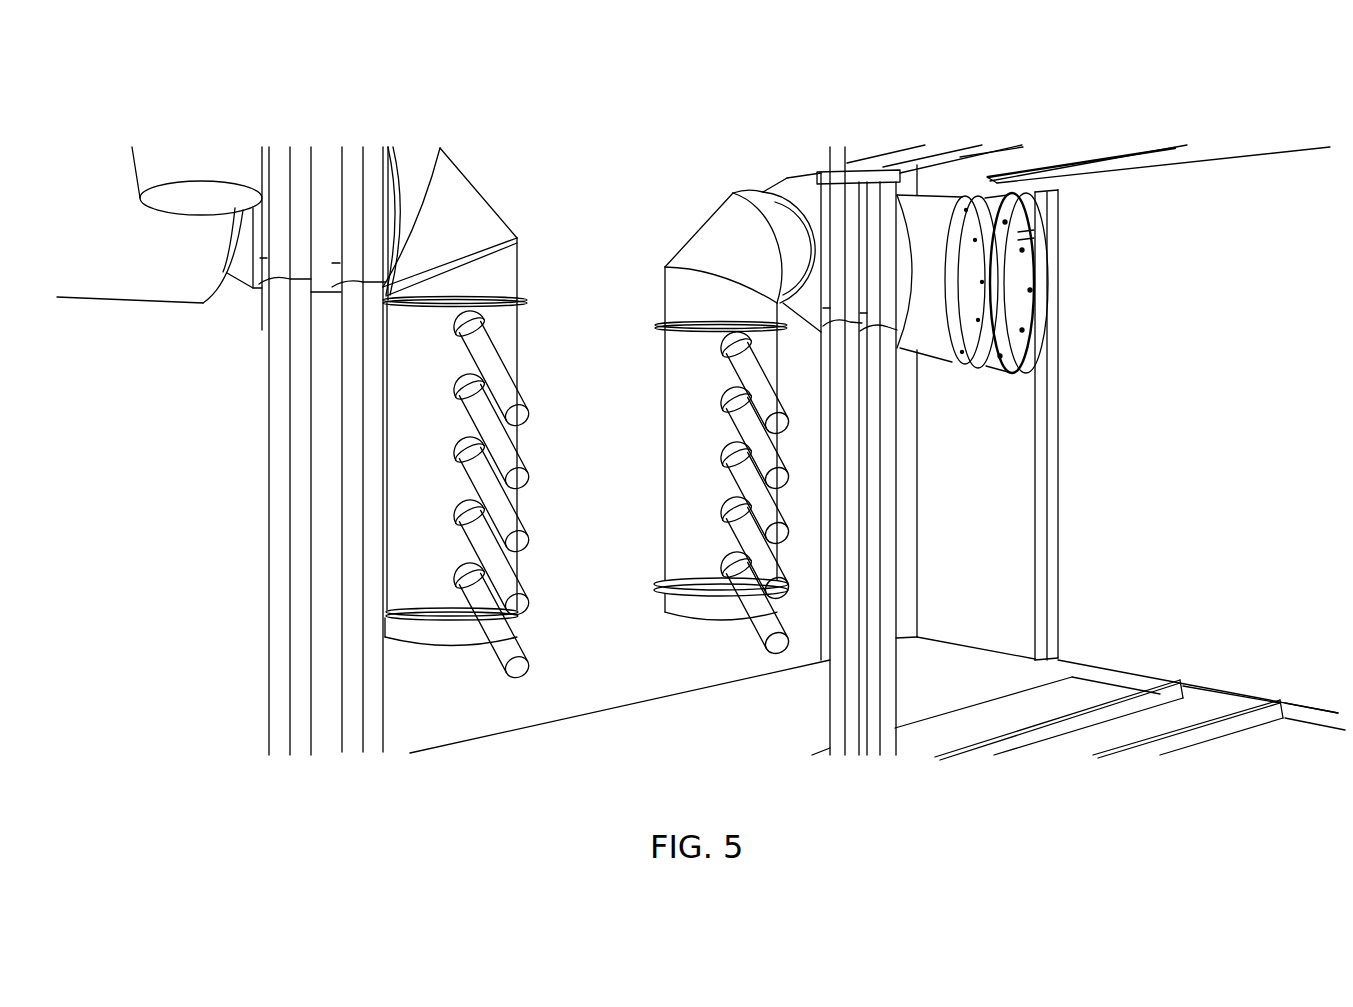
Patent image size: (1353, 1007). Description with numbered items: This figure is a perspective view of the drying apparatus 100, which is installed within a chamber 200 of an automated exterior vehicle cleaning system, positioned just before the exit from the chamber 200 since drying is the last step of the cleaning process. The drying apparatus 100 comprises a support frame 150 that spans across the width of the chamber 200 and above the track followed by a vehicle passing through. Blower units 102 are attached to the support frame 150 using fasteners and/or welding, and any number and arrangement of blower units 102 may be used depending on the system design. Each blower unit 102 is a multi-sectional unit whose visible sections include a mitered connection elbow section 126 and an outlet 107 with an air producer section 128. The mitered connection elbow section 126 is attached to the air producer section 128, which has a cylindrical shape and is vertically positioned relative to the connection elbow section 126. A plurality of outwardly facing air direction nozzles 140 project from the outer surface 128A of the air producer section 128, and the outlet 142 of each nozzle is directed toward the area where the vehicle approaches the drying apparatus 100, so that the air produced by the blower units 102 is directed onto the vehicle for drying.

The drying apparatus 100 is at (1125, 118).
The blower unit 102 is at (885, 92).
The outlet 107 is at (452, 647).
The mitered connection elbow section 126 is at (478, 192).
The air producer section 128 is at (425, 635).
The outer surface 128A is at (410, 555).
The air direction nozzle 140 is at (513, 648).
The outlet of the nozzle 142 is at (777, 645).
The support frame 150 is at (885, 698).
The chamber 200 is at (663, 645).